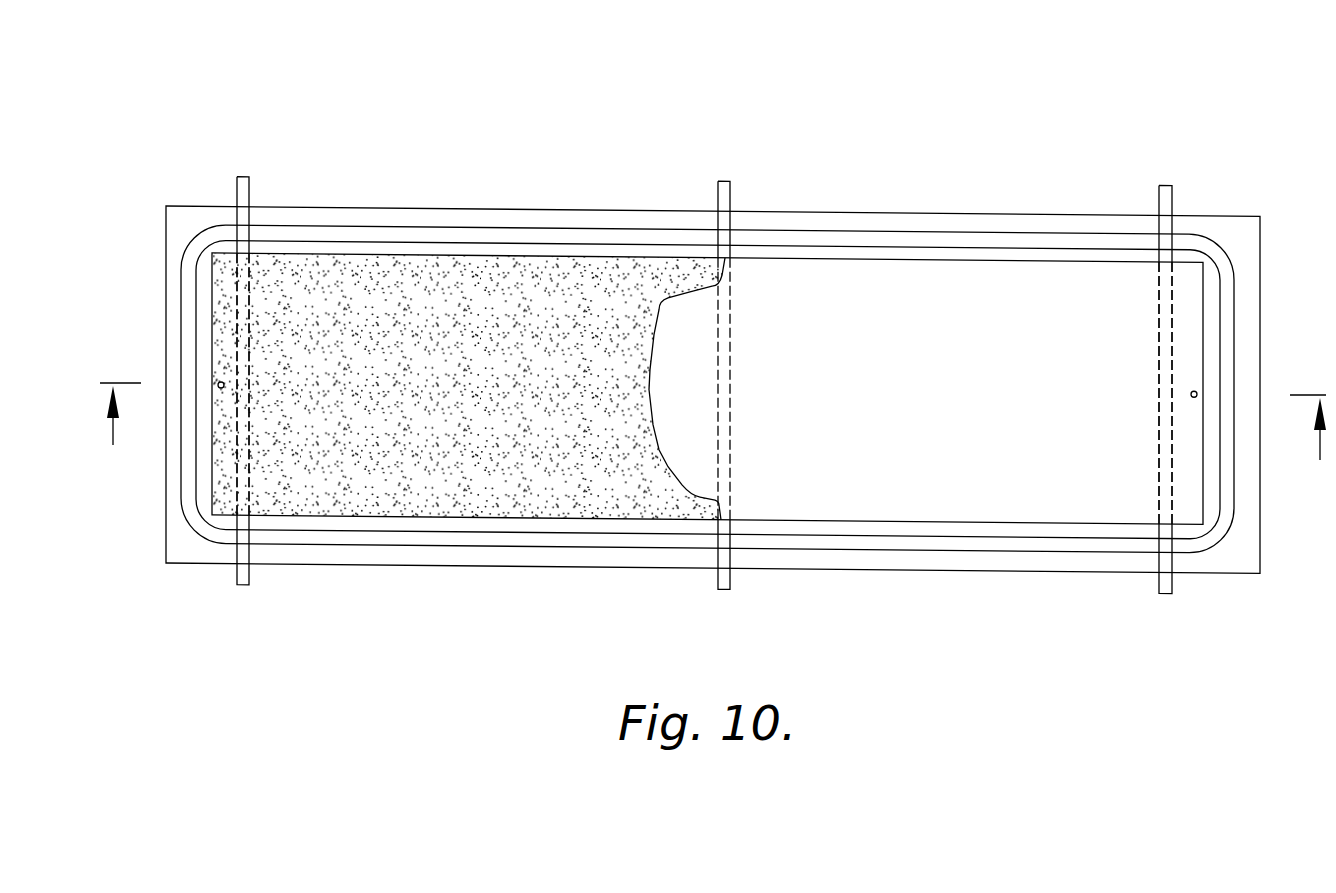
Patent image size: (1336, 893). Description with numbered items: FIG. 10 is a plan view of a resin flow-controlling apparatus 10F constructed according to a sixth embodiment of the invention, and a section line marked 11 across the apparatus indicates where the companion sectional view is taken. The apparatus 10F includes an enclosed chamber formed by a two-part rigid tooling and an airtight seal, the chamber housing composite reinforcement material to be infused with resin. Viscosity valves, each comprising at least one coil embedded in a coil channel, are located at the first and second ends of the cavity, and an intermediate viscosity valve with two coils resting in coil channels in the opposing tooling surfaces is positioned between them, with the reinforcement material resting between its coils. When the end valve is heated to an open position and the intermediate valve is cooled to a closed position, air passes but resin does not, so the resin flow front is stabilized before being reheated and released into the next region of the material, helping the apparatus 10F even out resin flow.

The resin flow-controlling apparatus 10F is at (534, 104).
The section line 11 is at (715, 402).